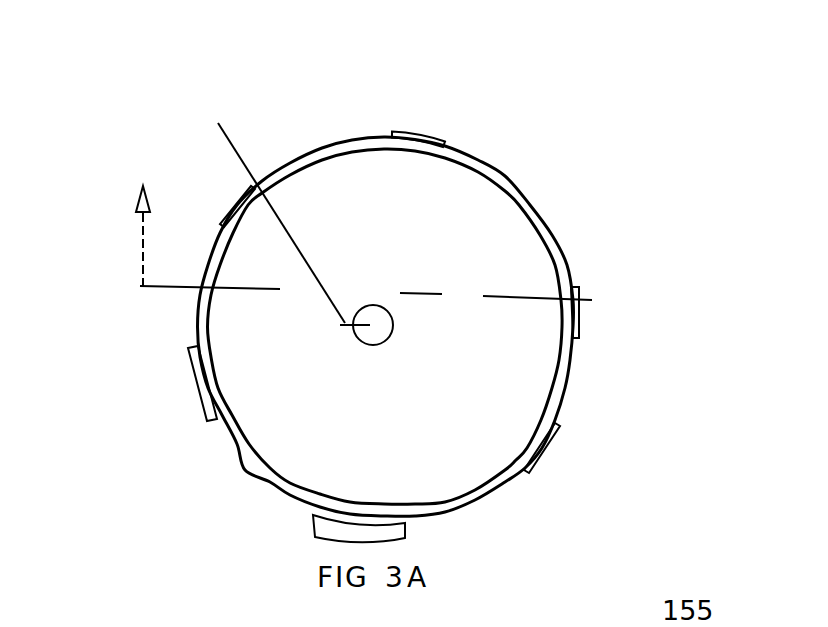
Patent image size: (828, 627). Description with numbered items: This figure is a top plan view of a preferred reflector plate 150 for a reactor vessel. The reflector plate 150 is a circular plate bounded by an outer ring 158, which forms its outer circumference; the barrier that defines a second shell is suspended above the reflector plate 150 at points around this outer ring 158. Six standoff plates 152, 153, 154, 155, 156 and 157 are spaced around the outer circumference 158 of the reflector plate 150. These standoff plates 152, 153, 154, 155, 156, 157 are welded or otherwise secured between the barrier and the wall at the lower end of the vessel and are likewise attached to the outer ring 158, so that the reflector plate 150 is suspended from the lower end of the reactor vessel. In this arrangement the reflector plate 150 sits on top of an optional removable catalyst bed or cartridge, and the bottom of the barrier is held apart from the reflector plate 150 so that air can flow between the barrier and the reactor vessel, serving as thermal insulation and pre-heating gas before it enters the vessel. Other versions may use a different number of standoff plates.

The reflector plate 150 is at (306, 346).
The standoff plate 152 is at (197, 386).
The standoff plate 153 is at (232, 208).
The standoff plate 154 is at (427, 133).
The standoff plate 155 is at (579, 323).
The standoff plate 156 is at (542, 455).
The standoff plate 157 is at (317, 535).
The outer ring 158 is at (482, 501).